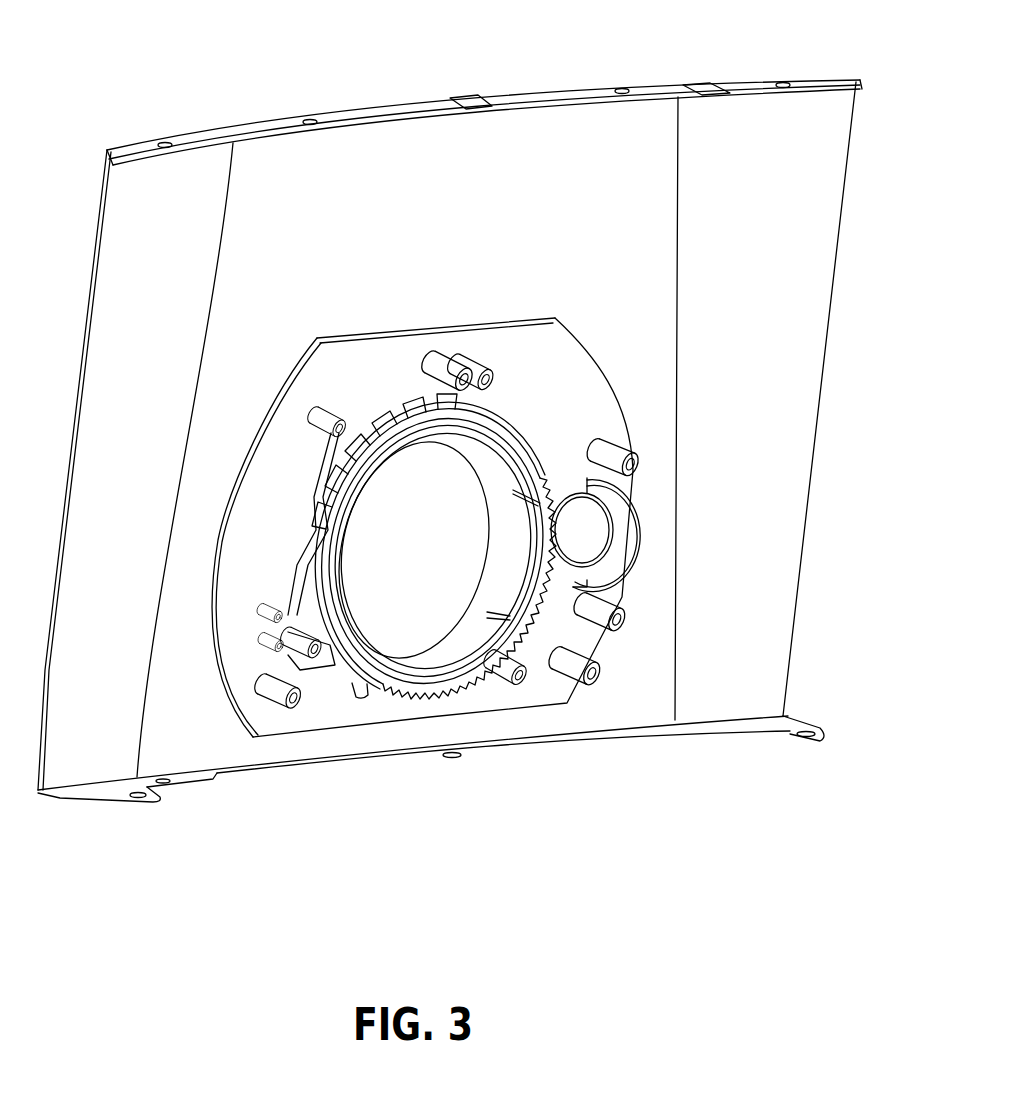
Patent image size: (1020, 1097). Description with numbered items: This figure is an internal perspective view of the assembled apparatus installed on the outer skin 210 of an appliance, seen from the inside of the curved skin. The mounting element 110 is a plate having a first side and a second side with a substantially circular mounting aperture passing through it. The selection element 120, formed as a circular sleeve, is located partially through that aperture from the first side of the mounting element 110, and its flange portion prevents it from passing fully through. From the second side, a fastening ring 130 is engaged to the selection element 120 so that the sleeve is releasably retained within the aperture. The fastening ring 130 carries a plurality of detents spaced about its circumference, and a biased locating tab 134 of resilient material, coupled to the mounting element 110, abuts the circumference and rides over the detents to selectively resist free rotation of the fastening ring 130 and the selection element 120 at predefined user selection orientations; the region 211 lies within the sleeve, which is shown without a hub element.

The mounting element 110 is at (537, 363).
The selection element 120 is at (503, 585).
The fastening ring 130 is at (361, 700).
The locating tab 134 is at (311, 541).
The outer skin 210 is at (358, 115).
The opening 211 is at (425, 500).